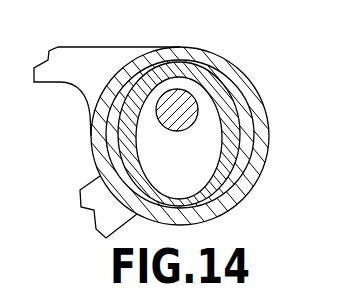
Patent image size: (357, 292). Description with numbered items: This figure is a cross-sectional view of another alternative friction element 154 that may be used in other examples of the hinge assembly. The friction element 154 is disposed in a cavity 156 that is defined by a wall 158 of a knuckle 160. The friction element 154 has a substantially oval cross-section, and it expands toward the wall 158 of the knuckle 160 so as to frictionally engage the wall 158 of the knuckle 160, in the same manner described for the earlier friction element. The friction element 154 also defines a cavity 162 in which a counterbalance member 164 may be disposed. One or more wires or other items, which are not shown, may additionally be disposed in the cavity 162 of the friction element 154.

The friction element 154 is at (240, 148).
The cavity 156 is at (251, 125).
The wall 158 is at (137, 149).
The knuckle 160 is at (262, 93).
The cavity 162 is at (237, 201).
The counterbalance member 164 is at (192, 68).